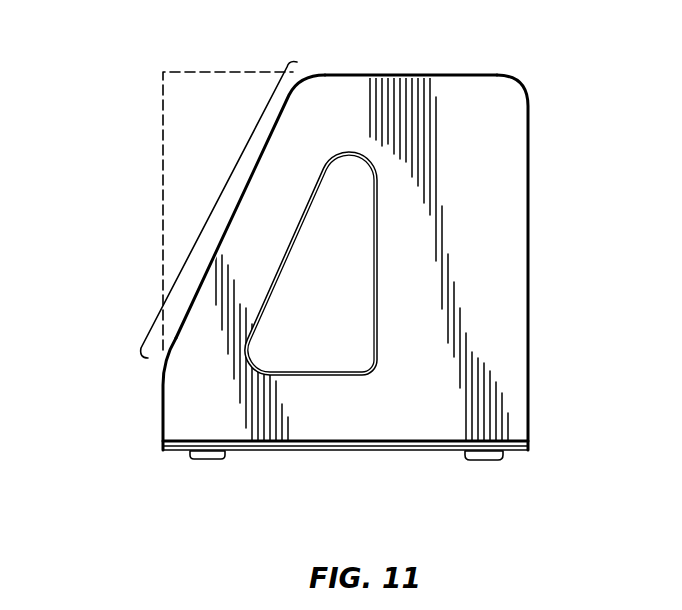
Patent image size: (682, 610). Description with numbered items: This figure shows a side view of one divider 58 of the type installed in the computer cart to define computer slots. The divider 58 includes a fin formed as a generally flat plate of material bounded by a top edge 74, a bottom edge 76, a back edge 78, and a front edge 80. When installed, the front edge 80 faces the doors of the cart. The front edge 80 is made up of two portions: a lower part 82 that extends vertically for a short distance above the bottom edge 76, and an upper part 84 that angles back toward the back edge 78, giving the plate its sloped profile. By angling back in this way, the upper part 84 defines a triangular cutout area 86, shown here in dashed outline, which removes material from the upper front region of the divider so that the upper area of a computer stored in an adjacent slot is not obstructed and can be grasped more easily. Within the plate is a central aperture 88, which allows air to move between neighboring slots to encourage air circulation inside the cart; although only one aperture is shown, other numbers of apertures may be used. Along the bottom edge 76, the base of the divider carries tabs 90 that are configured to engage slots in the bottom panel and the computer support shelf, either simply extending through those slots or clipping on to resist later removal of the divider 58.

The divider 58 is at (562, 55).
The top edge 74 is at (305, 61).
The bottom edge 76 is at (158, 479).
The back edge 78 is at (548, 77).
The front edge 80 is at (93, 72).
The lower part 82 is at (148, 367).
The upper part 84 is at (243, 150).
The triangular cutout area 86 is at (213, 100).
The central aperture 88 is at (311, 294).
The tabs 90 is at (202, 458).